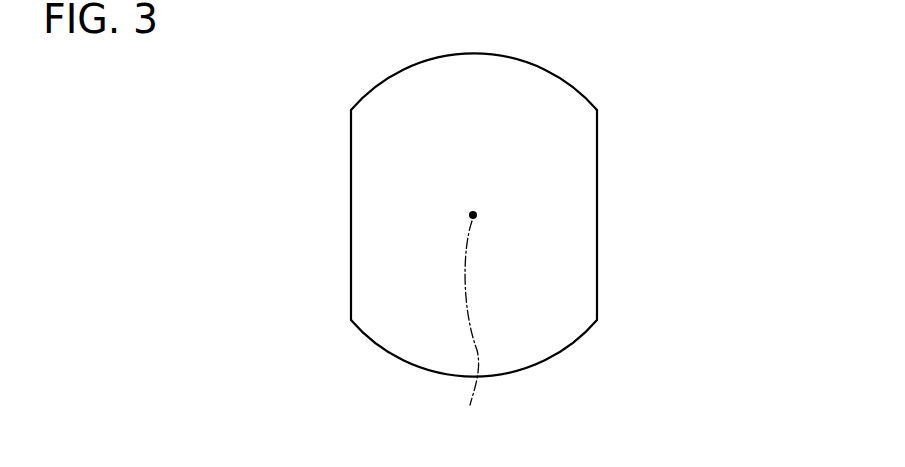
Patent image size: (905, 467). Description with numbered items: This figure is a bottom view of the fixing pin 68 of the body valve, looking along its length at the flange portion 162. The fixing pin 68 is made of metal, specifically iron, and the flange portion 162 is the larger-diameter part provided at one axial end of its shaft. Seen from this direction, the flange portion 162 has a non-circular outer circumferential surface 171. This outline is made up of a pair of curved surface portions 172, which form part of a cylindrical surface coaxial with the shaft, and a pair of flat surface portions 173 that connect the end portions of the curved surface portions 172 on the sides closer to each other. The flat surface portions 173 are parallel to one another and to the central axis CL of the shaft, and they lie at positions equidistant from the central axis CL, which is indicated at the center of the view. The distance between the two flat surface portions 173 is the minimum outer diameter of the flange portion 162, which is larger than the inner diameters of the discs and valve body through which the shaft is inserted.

The fixing pin 68 is at (593, 355).
The flange portion 162 is at (580, 300).
The outer circumferential surface 171 is at (565, 82).
The curved surface portions 172 is at (392, 79).
The flat surface portions 173 is at (351, 146).
The central axis CL is at (471, 323).